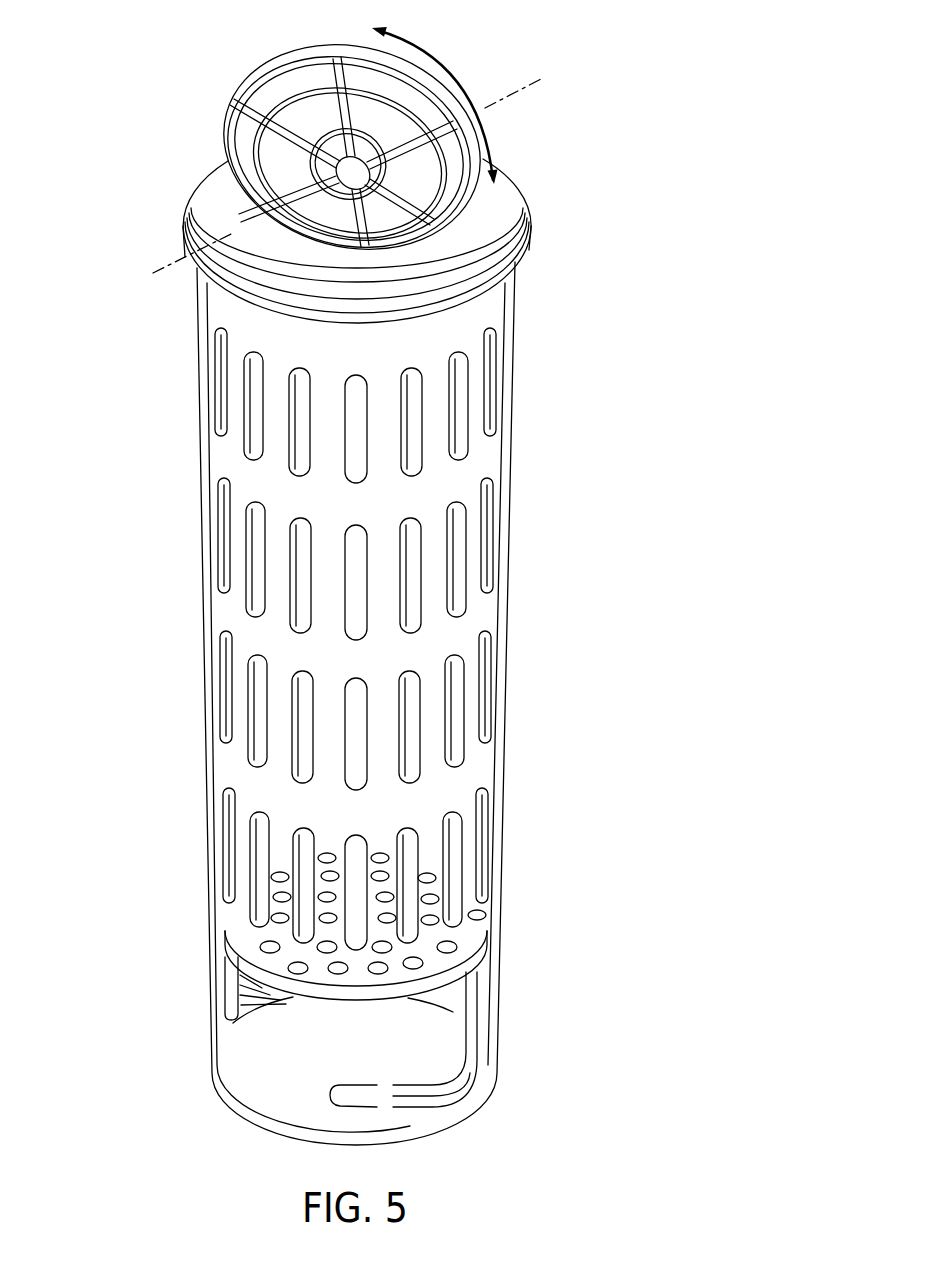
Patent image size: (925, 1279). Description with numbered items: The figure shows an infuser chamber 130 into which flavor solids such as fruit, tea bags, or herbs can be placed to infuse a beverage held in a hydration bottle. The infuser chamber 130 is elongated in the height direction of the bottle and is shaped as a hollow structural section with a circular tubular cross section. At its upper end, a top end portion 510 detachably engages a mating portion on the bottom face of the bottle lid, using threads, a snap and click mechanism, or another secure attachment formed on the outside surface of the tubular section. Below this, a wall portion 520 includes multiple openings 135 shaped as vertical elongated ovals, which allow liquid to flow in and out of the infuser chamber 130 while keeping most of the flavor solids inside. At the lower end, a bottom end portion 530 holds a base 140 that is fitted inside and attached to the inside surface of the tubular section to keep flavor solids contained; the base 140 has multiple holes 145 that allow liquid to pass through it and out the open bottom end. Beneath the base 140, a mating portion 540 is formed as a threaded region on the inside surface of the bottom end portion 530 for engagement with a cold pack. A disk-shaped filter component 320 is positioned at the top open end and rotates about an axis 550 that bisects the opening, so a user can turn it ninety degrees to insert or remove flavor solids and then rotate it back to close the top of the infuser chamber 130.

The infuser chamber 130 is at (672, 275).
The openings 135 is at (356, 582).
The base 140 is at (482, 948).
The holes 145 is at (420, 962).
The filter component 320 is at (292, 50).
The top end portion 510 is at (135, 118).
The wall portion 520 is at (135, 285).
The bottom end portion 530 is at (135, 938).
The mating portion 540 is at (455, 1082).
The axis 550 is at (541, 74).